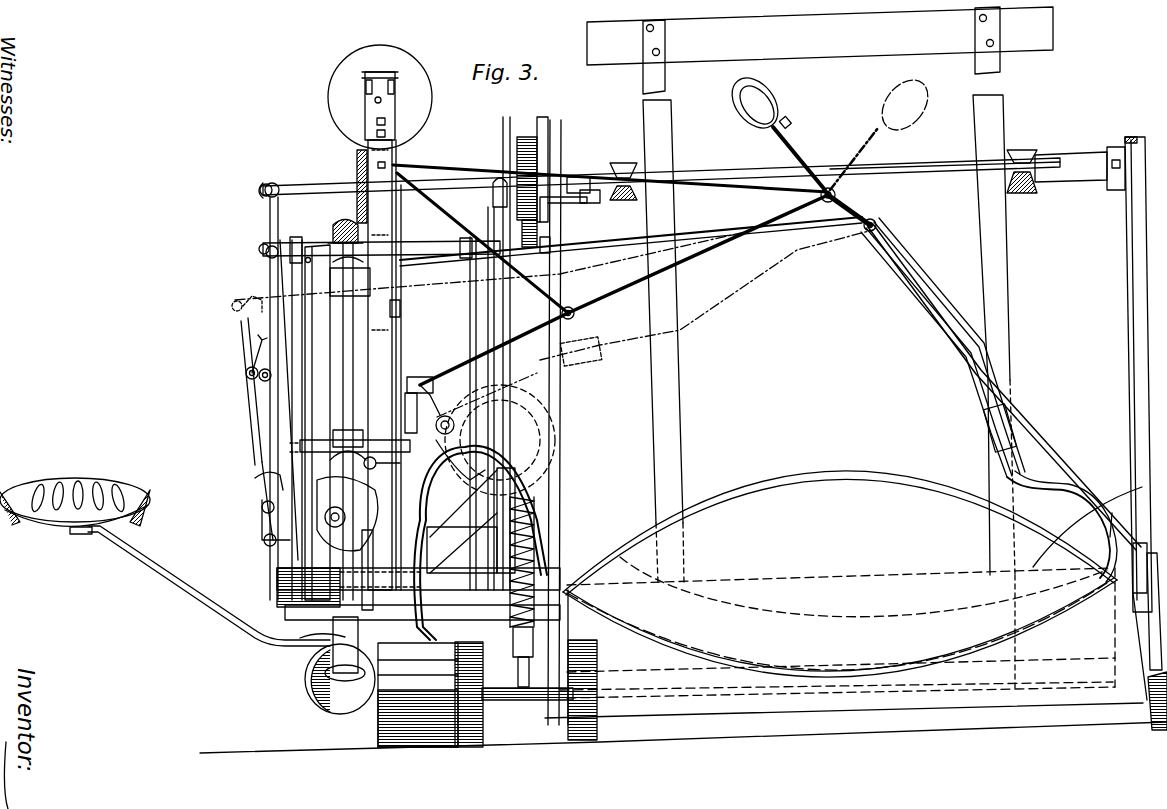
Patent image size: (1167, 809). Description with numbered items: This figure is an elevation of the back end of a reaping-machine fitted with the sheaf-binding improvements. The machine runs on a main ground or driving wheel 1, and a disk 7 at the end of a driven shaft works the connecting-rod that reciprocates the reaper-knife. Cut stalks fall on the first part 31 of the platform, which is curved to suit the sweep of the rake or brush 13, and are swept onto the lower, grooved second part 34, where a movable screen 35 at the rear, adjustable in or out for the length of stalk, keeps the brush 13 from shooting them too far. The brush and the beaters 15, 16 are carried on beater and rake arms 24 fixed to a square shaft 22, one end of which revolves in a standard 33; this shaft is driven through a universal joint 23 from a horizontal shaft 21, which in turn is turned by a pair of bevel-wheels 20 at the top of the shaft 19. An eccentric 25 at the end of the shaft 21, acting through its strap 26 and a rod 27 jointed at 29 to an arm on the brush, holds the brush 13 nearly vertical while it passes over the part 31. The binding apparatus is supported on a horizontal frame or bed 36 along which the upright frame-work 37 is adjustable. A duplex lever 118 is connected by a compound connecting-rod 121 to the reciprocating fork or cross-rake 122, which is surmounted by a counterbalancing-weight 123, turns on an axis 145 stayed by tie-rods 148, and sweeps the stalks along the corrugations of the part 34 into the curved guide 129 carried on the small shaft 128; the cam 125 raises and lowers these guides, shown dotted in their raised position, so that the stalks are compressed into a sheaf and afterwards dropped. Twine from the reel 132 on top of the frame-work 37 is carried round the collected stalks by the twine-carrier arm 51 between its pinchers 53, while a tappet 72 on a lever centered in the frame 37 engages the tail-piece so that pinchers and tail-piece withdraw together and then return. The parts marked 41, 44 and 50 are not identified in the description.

The main ground or driving wheel 1 is at (418, 380).
The disk 7 is at (337, 665).
The rake or brush 13 is at (836, 688).
The beater 15 is at (820, 36).
The beater 16 is at (945, 164).
The shaft 19 is at (350, 421).
The pair of bevel-wheels 20 is at (347, 196).
The horizontal shaft 21 is at (659, 178).
The square shaft 22 is at (1080, 168).
The universal joint 23 is at (429, 217).
The beater and rake arms 24 is at (823, 348).
The eccentric 25 is at (542, 182).
The strap 26 is at (512, 192).
The rod 27 is at (562, 422).
The joint 29 is at (535, 592).
The first part of the platform 31 is at (1087, 527).
The standard 33 is at (1146, 433).
The second part of the platform 34 is at (747, 502).
The movable screen 35 is at (840, 574).
The horizontal frame or bed 36 is at (477, 667).
The upright frame-work 37 is at (486, 428).
The lever 41 is at (305, 430).
The seat support 44 is at (187, 562).
The sprocket wheel 50 is at (500, 440).
The twine-carrier arm 51 is at (434, 409).
The twine-carrier pinchers 53 is at (423, 405).
The tappet 72 is at (263, 503).
The duplex lever 118 is at (298, 391).
The compound connecting-rod 121 is at (554, 291).
The reciprocating fork or cross-rake 122 is at (989, 400).
The counterbalancing-weight 123 is at (883, 130).
The cam 125 is at (430, 625).
The small shaft 128 is at (382, 463).
The curved guide 129 is at (580, 455).
The reel of twine 132 is at (380, 97).
The axis of the rake 145 is at (848, 209).
The tie-rods 148 is at (767, 350).